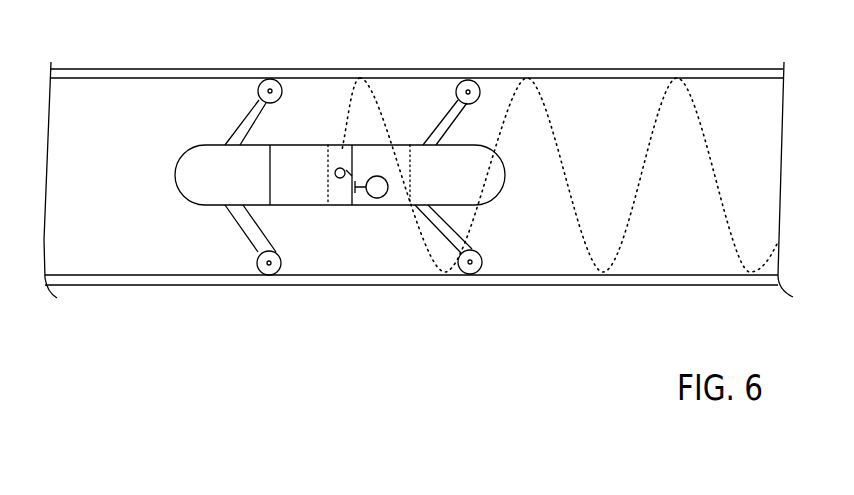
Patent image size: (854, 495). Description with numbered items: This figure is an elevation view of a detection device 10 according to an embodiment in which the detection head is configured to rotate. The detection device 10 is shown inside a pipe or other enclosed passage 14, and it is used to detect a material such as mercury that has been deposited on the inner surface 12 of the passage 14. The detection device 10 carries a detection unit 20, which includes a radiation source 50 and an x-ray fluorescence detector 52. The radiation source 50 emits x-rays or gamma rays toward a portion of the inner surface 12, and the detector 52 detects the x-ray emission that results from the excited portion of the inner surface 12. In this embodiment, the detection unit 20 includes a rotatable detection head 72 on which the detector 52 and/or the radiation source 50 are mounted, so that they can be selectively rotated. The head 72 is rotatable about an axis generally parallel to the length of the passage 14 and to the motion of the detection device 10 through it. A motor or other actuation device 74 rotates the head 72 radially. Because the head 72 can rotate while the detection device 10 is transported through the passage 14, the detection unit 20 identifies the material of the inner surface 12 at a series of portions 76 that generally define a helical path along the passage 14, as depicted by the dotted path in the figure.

The detection device 10 is at (154, 124).
The inner surface 12 is at (676, 278).
The passage 14 is at (730, 68).
The detection unit 20 is at (325, 138).
The radiation source 50 is at (340, 167).
The x-ray fluorescence detector 52 is at (349, 171).
The rotatable detection head 72 is at (338, 206).
The actuation device 74 is at (368, 206).
The portions of the inner surface 76 is at (564, 168).